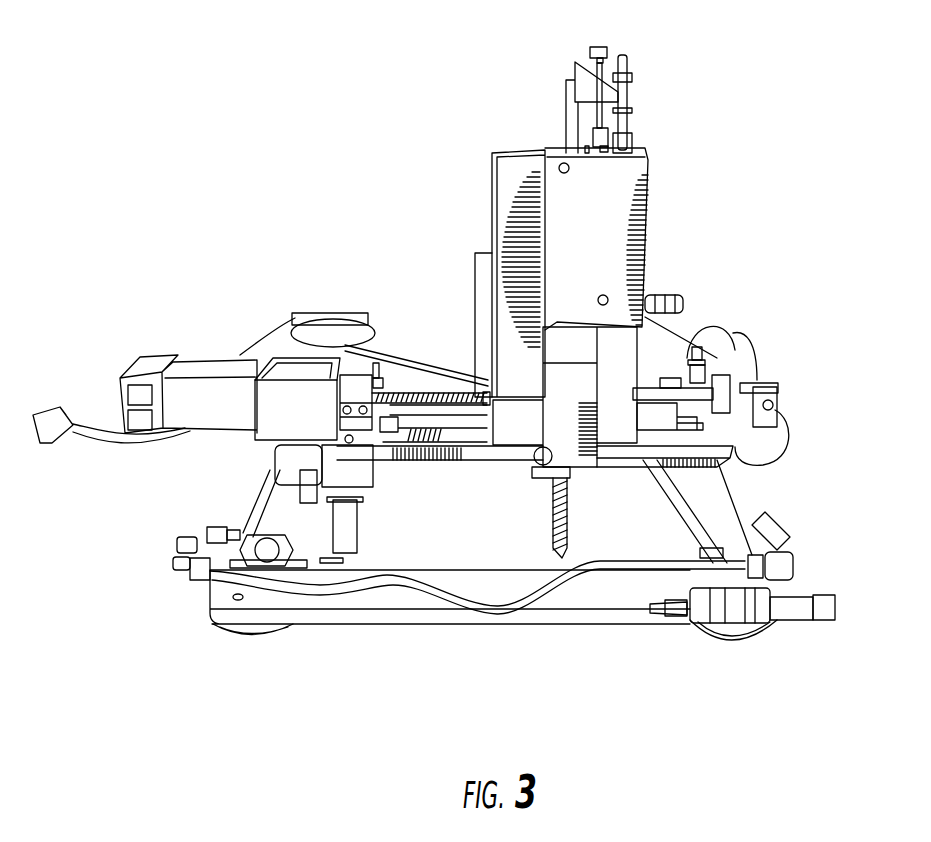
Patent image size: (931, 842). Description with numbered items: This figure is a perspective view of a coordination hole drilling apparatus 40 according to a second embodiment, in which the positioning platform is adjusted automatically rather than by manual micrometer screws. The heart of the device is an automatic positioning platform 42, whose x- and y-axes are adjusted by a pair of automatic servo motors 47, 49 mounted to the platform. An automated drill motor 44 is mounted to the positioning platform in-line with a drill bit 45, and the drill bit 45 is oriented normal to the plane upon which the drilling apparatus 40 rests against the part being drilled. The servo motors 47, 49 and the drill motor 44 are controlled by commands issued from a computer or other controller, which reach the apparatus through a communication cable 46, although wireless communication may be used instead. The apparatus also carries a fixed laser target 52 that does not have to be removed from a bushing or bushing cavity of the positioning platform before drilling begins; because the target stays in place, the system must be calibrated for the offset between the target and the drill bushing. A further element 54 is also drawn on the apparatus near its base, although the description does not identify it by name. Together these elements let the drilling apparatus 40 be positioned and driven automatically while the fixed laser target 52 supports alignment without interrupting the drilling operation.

The coordination hole drilling apparatus 40 is at (820, 150).
The automatic positioning platform 42 is at (372, 290).
The automated drill motor 44 is at (552, 225).
The drill bit 45 is at (572, 508).
The communication cable 46 is at (53, 440).
The automatic servo motor 47 is at (200, 365).
The automatic servo motor 49 is at (477, 320).
The fixed laser target 52 is at (536, 458).
The pneumatic cylinder 54 is at (755, 650).